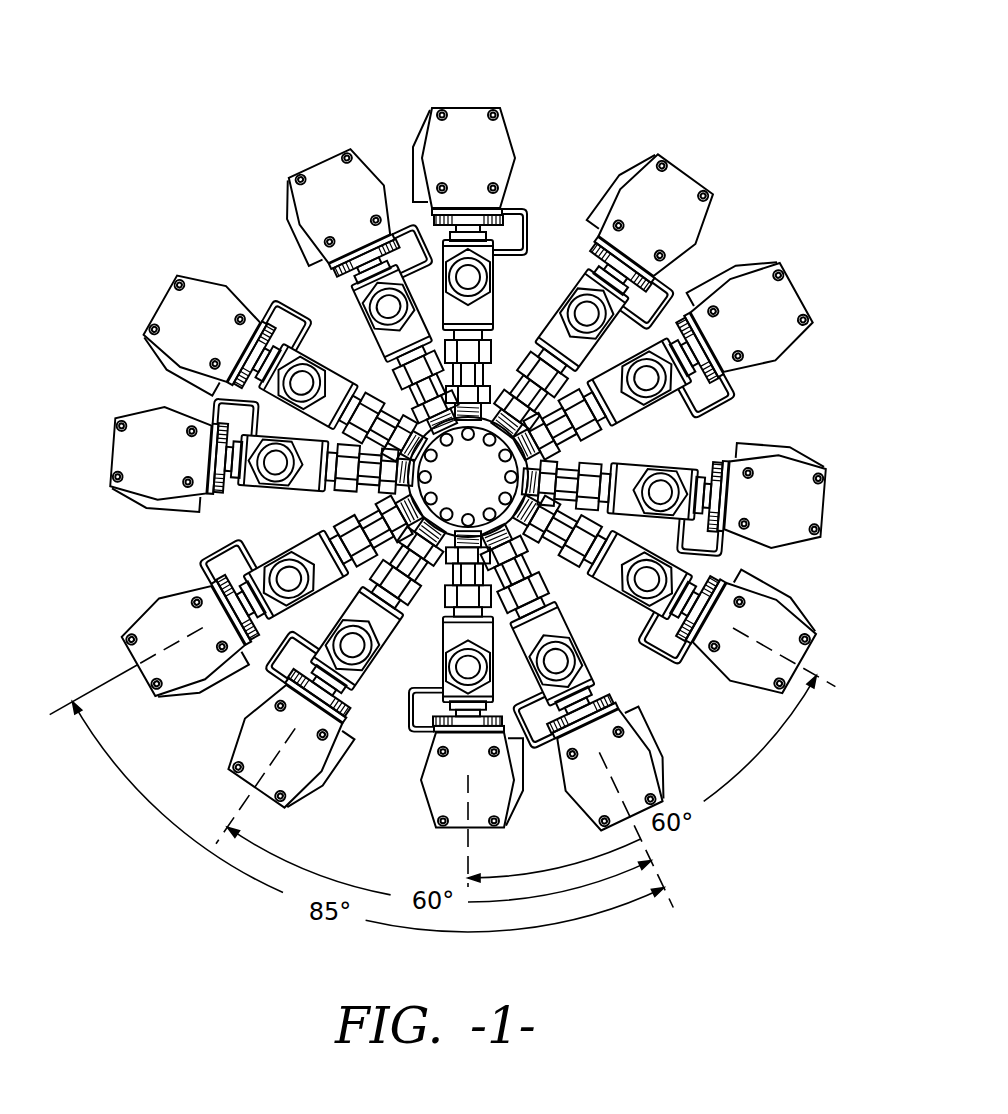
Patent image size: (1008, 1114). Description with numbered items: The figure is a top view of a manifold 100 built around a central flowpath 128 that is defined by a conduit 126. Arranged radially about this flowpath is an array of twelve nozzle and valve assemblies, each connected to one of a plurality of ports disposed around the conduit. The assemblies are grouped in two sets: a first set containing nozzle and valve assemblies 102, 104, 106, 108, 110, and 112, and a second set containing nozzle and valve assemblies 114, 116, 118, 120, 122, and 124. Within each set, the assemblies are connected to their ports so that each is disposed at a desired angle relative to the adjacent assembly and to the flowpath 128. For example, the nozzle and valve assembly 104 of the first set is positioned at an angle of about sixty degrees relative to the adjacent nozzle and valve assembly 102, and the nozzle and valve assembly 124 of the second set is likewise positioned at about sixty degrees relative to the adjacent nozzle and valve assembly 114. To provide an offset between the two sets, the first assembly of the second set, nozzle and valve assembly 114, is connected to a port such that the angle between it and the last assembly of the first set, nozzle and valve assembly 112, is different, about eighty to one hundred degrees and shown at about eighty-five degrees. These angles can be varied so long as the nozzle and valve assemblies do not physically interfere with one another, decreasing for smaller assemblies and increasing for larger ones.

The manifold 100 is at (621, 95).
The nozzle and valve assembly 102 is at (428, 793).
The nozzle and valve assembly 104 is at (773, 593).
The nozzle and valve assembly 106 is at (752, 267).
The nozzle and valve assembly 108 is at (450, 107).
The nozzle and valve assembly 110 is at (200, 275).
The nozzle and valve assembly 112 is at (147, 611).
The nozzle and valve assembly 114 is at (650, 735).
The nozzle and valve assembly 116 is at (674, 494).
The nozzle and valve assembly 118 is at (688, 178).
The nozzle and valve assembly 120 is at (330, 155).
The nozzle and valve assembly 122 is at (146, 410).
The nozzle and valve assembly 124 is at (230, 747).
The conduit 126 is at (582, 470).
The flowpath 128 is at (490, 483).